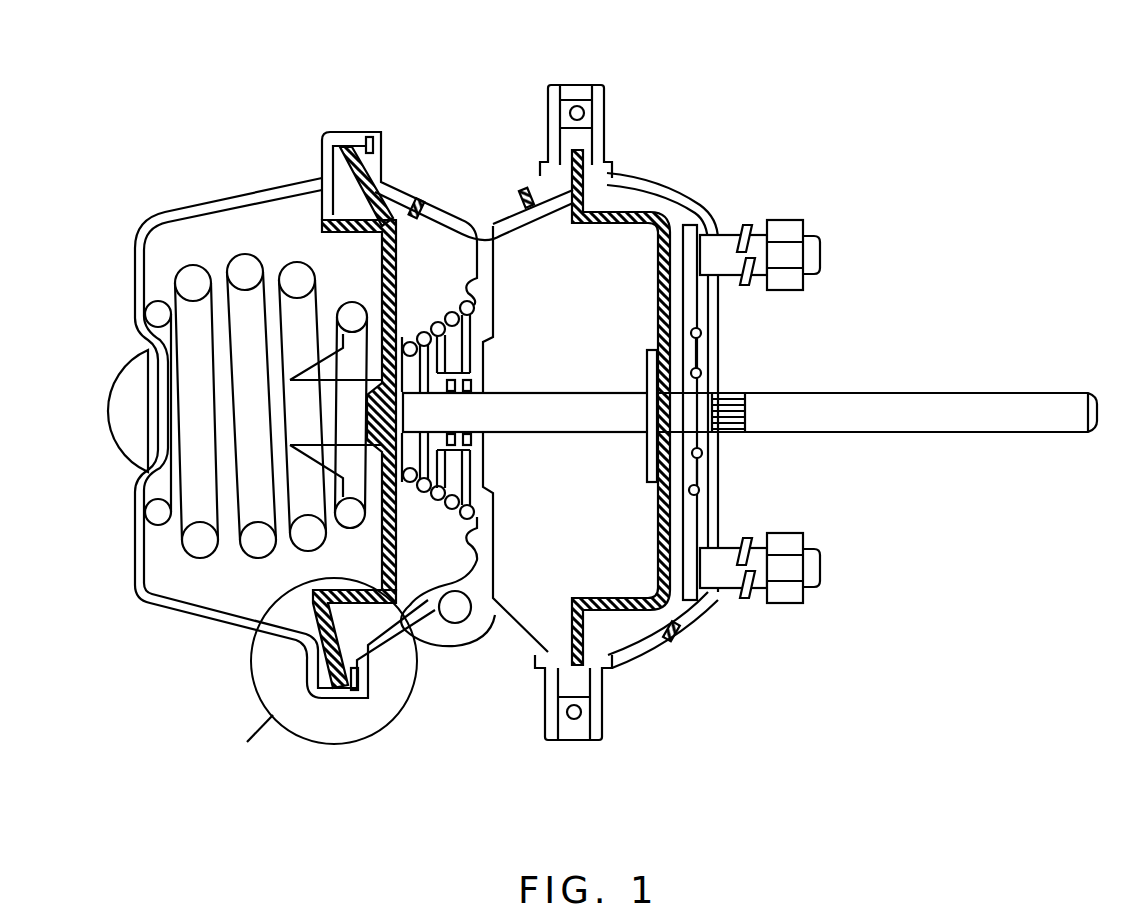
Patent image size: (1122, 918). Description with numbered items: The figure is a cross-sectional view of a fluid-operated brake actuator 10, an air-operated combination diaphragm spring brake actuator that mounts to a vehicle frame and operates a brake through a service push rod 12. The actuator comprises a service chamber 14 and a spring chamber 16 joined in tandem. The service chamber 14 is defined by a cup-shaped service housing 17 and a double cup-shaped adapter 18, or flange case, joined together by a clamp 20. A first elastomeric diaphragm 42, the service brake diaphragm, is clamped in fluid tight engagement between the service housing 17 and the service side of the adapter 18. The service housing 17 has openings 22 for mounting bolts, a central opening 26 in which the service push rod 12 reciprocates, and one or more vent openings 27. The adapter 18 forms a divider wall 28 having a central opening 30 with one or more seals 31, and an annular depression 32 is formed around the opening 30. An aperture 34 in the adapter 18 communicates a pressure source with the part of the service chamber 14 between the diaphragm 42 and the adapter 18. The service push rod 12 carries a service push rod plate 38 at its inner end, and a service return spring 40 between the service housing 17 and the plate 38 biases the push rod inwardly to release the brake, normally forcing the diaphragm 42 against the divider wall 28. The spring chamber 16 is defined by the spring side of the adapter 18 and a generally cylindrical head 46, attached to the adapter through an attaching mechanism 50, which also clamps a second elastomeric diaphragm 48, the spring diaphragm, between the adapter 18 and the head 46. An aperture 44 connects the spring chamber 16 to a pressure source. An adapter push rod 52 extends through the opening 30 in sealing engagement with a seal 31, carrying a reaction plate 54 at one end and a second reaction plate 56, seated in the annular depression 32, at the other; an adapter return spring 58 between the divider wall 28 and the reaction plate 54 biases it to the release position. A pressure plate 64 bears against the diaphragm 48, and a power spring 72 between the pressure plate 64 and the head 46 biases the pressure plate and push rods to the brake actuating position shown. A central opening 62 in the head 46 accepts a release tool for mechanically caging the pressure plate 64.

The fluid-operated brake actuator 10 is at (452, 86).
The service push rod 12 is at (925, 405).
The service chamber 14 is at (703, 407).
The spring chamber 16 is at (216, 188).
The service housing 17 is at (640, 173).
The adapter 18 is at (525, 630).
The clamp 20 is at (580, 88).
The openings 22 is at (722, 545).
The central opening 26 is at (720, 365).
The vent openings 27 is at (674, 636).
The divider wall 28 is at (489, 258).
The central opening 30 is at (487, 392).
The seals 31 is at (478, 442).
The annular depression 32 is at (483, 475).
The aperture 34 is at (524, 188).
The service push rod plate 38 is at (677, 305).
The service return spring 40 is at (700, 480).
The first elastomeric diaphragm 42 is at (608, 614).
The aperture 44 is at (428, 189).
The head 46 is at (165, 620).
The second elastomeric diaphragm 48 is at (386, 186).
The attaching mechanism 50 is at (365, 116).
The adapter push rod 52 is at (550, 410).
The reaction plate 54 is at (398, 345).
The second reaction plate 56 is at (653, 452).
The adapter return spring 58 is at (452, 505).
The central opening 62 is at (167, 437).
The pressure plate 64 is at (375, 550).
The power spring 72 is at (185, 540).